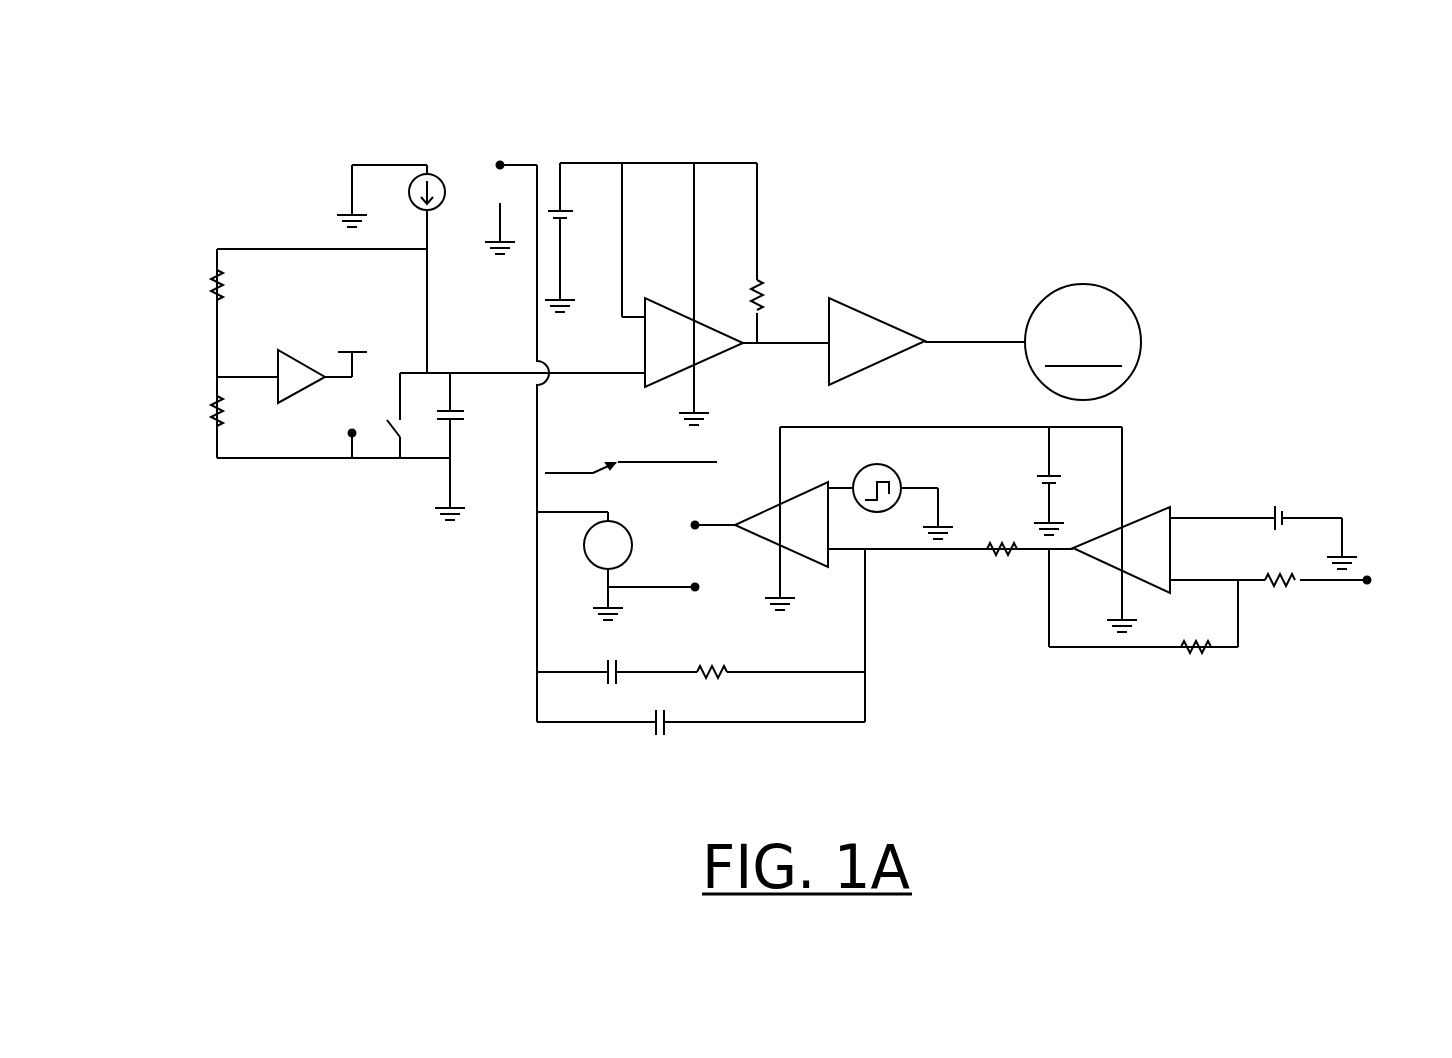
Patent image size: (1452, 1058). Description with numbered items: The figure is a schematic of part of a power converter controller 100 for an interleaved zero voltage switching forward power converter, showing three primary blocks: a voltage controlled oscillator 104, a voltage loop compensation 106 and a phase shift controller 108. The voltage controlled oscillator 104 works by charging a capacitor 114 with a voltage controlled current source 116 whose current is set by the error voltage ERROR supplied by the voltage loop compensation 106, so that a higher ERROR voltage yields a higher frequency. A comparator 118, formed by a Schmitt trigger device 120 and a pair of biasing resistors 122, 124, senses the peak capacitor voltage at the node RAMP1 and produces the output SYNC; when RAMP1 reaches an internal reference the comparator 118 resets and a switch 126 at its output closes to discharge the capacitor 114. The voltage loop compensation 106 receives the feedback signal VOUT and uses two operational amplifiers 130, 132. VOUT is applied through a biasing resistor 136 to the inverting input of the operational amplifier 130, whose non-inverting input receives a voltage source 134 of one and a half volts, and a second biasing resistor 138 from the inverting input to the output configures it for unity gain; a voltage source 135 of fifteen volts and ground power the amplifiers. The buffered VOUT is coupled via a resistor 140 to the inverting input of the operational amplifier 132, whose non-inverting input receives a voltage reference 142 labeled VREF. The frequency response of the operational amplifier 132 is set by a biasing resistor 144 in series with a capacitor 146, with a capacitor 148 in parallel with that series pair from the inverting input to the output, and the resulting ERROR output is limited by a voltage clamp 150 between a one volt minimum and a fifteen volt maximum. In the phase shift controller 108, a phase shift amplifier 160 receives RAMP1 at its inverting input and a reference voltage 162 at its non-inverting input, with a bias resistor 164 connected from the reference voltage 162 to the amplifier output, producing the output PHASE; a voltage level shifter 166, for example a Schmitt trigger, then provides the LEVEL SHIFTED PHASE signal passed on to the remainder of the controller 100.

The power converter controller 100 is at (980, 94).
The voltage controlled oscillator 104 is at (371, 126).
The voltage loop compensation 106 is at (850, 811).
The phase shift controller 108 is at (830, 149).
The capacitor 114 is at (472, 415).
The voltage controlled current source 116 is at (447, 192).
The comparator 118 is at (338, 291).
The Schmitt trigger device 120 is at (301, 390).
The biasing resistor 122 is at (238, 285).
The biasing resistor 124 is at (238, 411).
The switch 126 is at (379, 415).
The operational amplifier 130 is at (1121, 550).
The operational amplifier 132 is at (781, 524).
The voltage source 134 is at (1280, 507).
The voltage source 135 is at (1070, 475).
The biasing resistor 136 is at (1282, 565).
The biasing resistor 138 is at (1197, 633).
The resistor 140 is at (1003, 534).
The voltage reference 142 is at (877, 475).
The biasing resistor 144 is at (712, 657).
The capacitor 146 is at (610, 660).
The capacitor 148 is at (660, 709).
The voltage clamp 150 is at (630, 545).
The phase shift amplifier 160 is at (694, 342).
The reference voltage 162 is at (582, 231).
The bias resistor 164 is at (777, 253).
The voltage level shifter 166 is at (877, 341).